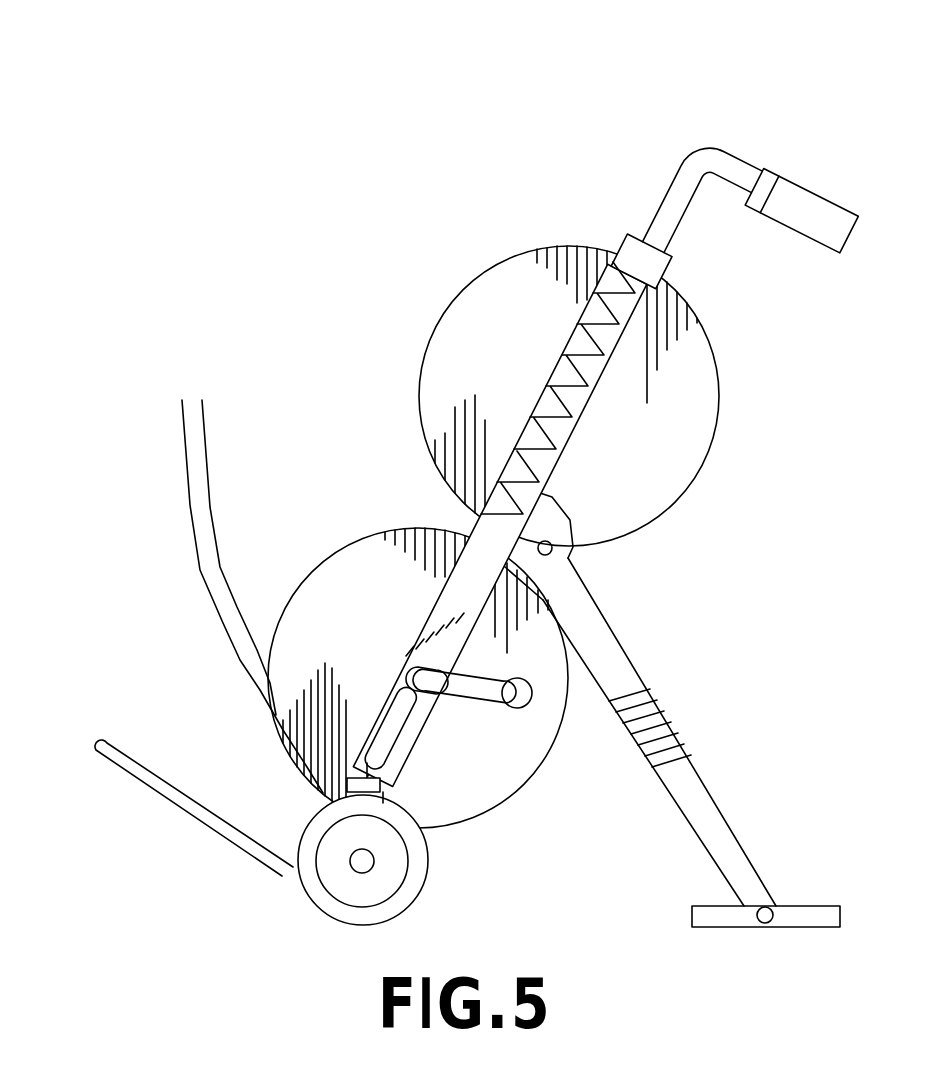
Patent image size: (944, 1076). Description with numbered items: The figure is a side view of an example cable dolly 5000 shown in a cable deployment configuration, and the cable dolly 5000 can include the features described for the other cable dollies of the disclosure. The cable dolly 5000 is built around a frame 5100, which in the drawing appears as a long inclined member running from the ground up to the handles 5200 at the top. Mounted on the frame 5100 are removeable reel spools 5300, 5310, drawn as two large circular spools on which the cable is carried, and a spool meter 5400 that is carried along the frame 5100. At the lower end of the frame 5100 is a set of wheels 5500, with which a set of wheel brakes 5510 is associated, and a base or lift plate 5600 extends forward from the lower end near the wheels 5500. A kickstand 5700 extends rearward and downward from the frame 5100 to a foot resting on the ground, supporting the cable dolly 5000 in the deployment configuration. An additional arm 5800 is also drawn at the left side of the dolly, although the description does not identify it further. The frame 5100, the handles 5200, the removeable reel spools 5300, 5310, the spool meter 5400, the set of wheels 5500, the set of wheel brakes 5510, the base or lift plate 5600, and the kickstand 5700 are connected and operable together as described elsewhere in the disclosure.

The cable dolly 5000 is at (469, 132).
The frame 5100 is at (685, 208).
The handles 5200 is at (787, 174).
The removeable reel spool 5300 is at (573, 398).
The removeable reel spool 5310 is at (433, 678).
The spool meter 5400 is at (605, 338).
The set of wheels 5500 is at (333, 862).
The set of wheel brakes 5510 is at (347, 790).
The base or lift plate 5600 is at (140, 777).
The kickstand 5700 is at (734, 874).
The support arm 5800 is at (208, 562).